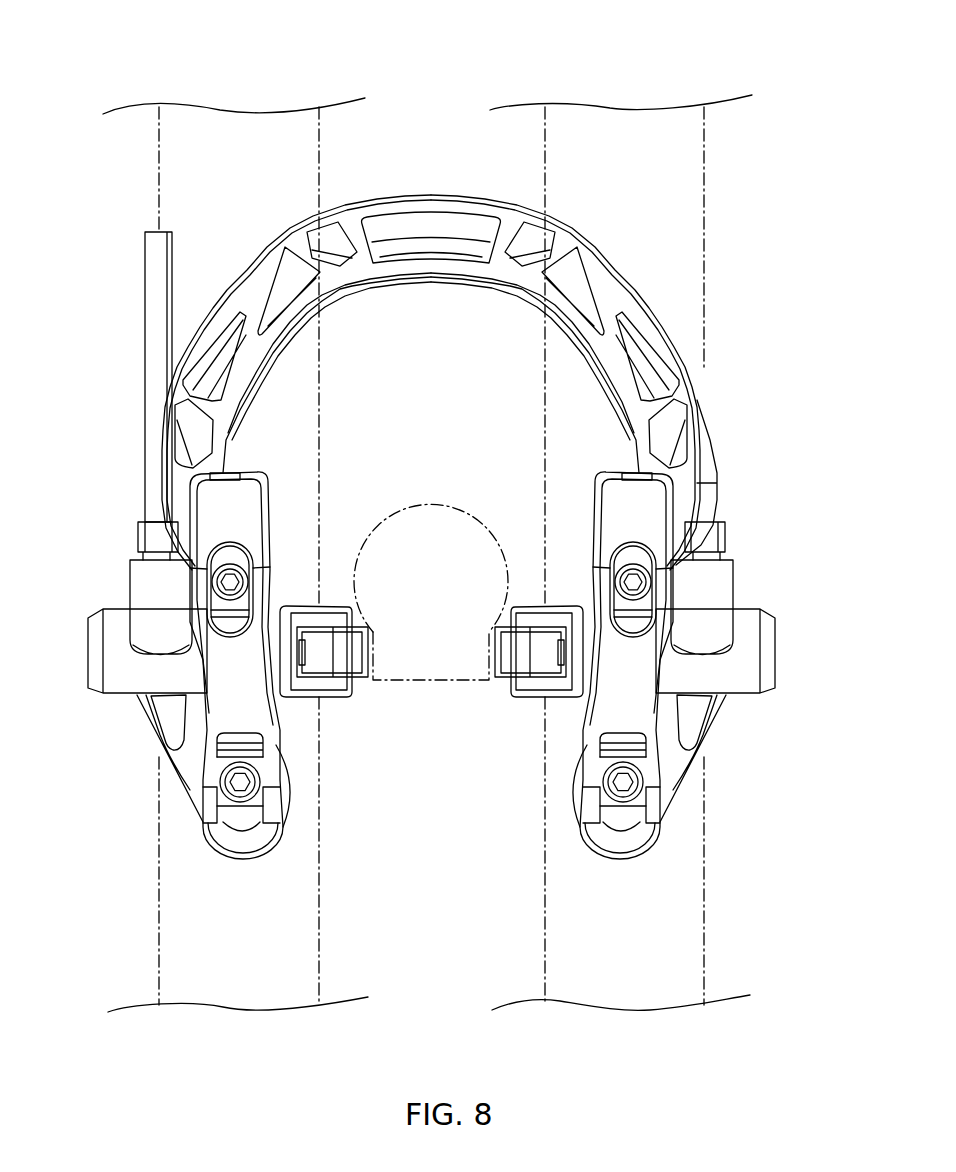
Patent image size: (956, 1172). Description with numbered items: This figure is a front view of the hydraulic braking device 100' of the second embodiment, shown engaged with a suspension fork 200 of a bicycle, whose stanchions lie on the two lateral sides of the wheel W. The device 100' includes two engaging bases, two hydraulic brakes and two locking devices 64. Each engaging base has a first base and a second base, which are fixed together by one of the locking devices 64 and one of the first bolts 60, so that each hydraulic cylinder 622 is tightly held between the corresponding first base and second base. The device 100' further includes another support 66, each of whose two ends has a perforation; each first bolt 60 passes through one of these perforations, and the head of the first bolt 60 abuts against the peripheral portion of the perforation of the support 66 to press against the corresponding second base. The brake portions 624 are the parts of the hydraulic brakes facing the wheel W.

The suspension fork 200 is at (668, 102).
The hydraulic braking device 100' is at (437, 479).
The another support 66 is at (423, 195).
The wheel W is at (428, 500).
The first bolt 60 is at (227, 560).
The hydraulic cylinder 622 is at (115, 693).
The brake pad 624 is at (352, 657).
The locking device 64 is at (203, 807).